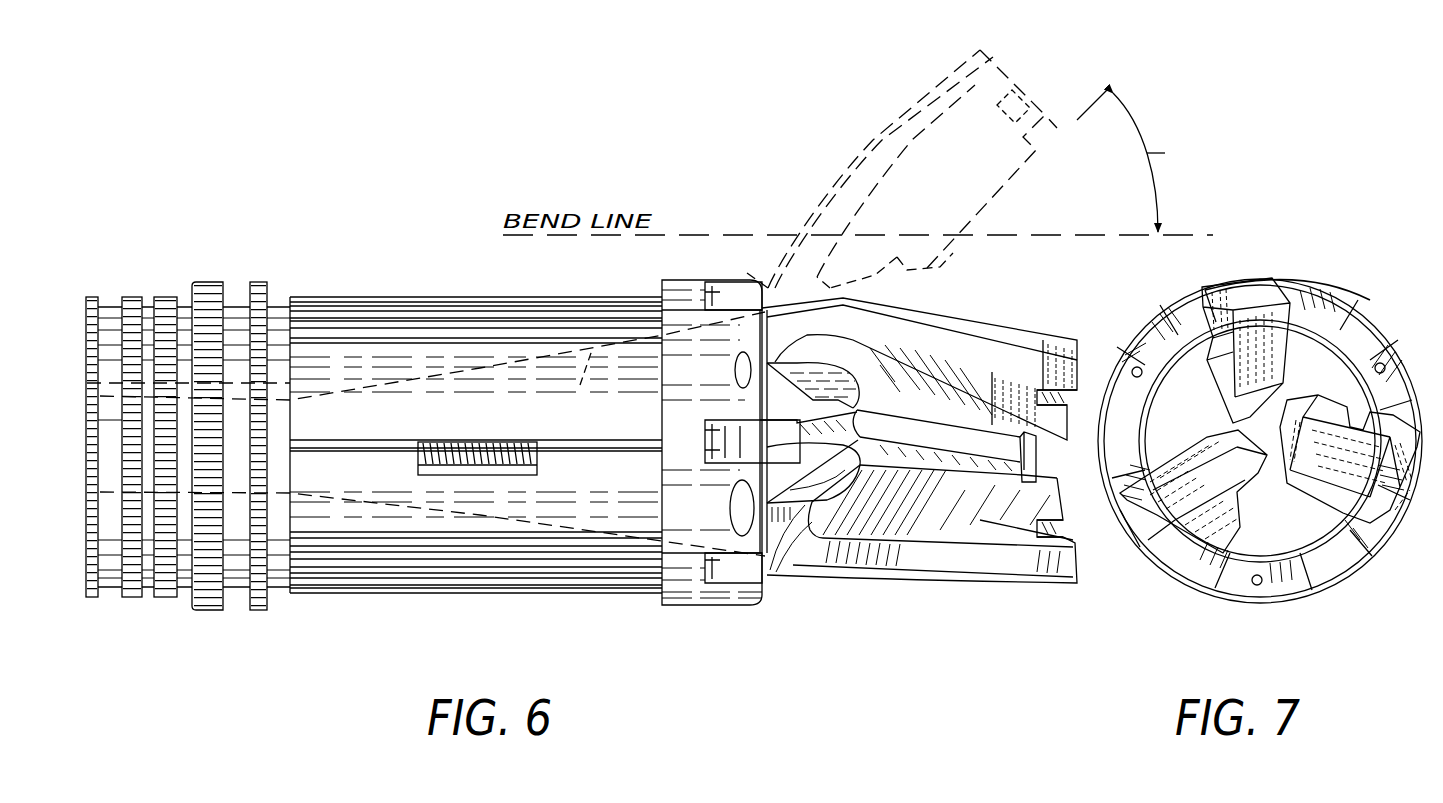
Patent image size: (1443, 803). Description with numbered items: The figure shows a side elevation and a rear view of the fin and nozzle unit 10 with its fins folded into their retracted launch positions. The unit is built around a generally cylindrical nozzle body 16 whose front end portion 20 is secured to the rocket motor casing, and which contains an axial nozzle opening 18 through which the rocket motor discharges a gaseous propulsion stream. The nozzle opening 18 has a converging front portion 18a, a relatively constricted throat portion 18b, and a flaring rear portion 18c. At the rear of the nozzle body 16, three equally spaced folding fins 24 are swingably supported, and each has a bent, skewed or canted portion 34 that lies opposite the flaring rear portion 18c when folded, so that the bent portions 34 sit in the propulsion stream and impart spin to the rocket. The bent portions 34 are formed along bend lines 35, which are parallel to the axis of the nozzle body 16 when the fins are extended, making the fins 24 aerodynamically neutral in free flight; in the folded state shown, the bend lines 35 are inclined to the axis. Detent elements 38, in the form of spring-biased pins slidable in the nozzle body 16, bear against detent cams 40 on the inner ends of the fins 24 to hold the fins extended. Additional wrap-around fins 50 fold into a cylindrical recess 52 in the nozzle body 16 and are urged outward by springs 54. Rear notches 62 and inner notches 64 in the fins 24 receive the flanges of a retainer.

In FIG. 6, the fin and nozzle unit 10 is at (970, 598).
In FIG. 6, the nozzle body 16 is at (212, 280).
In FIG. 7, the nozzle opening 18 is at (1295, 525).
In FIG. 6, the converging front portion 18a is at (218, 540).
In FIG. 6, the throat portion 18b is at (222, 335).
In FIG. 6, the flaring rear portion 18c is at (580, 385).
In FIG. 6, the front end portion 20 is at (132, 294).
In FIG. 6, the folding fins 24 is at (983, 310).
In FIG. 7, the folding fins 24 is at (1225, 280).
In FIG. 6, the bent portions 34 is at (1010, 370).
In FIG. 7, the bent portions 34 is at (1265, 360).
In FIG. 6, the bend lines 35 is at (1058, 237).
In FIG. 6, the detent elements 38 is at (707, 420).
In FIG. 6, the detent cams 40 is at (705, 460).
In FIG. 6, the wrap-around fins 50 is at (342, 315).
In FIG. 7, the cylindrical recess 52 is at (1384, 368).
In FIG. 6, the springs 54 is at (500, 462).
In FIG. 6, the rear notches 62 is at (1062, 395).
In FIG. 7, the rear notches 62 is at (1125, 545).
In FIG. 6, the inner notches 64 is at (1025, 482).